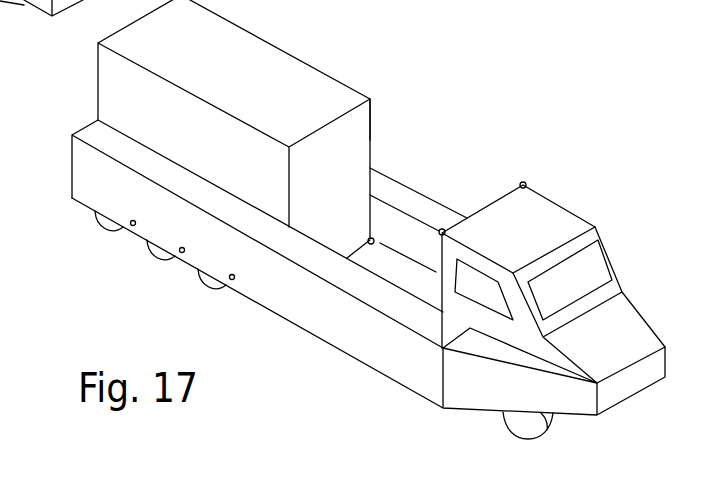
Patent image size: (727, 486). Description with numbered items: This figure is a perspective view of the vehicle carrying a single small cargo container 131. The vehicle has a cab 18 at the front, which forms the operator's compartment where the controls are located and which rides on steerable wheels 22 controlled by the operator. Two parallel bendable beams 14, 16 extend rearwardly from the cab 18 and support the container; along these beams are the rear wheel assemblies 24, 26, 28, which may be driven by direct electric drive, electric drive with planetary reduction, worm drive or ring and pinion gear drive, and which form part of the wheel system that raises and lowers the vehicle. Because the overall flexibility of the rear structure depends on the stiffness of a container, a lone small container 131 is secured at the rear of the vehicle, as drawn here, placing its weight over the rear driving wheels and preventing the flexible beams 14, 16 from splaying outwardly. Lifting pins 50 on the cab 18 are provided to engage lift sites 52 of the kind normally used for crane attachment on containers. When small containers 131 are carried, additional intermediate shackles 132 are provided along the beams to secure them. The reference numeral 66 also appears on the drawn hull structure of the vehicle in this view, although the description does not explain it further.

The bendable beam 14 is at (328, 322).
The bendable beam 16 is at (435, 212).
The cab 18 is at (570, 225).
The steerable wheels 22 is at (551, 431).
The rear wheel assembly 24 is at (106, 229).
The rear wheel assembly 26 is at (154, 262).
The rear wheel assembly 28 is at (215, 290).
The lifting pin 50 is at (526, 182).
The lift site 52 is at (372, 113).
The hull upper body 66 is at (93, 188).
The small container 131 is at (97, 87).
The intermediate shackle 132 is at (371, 238).